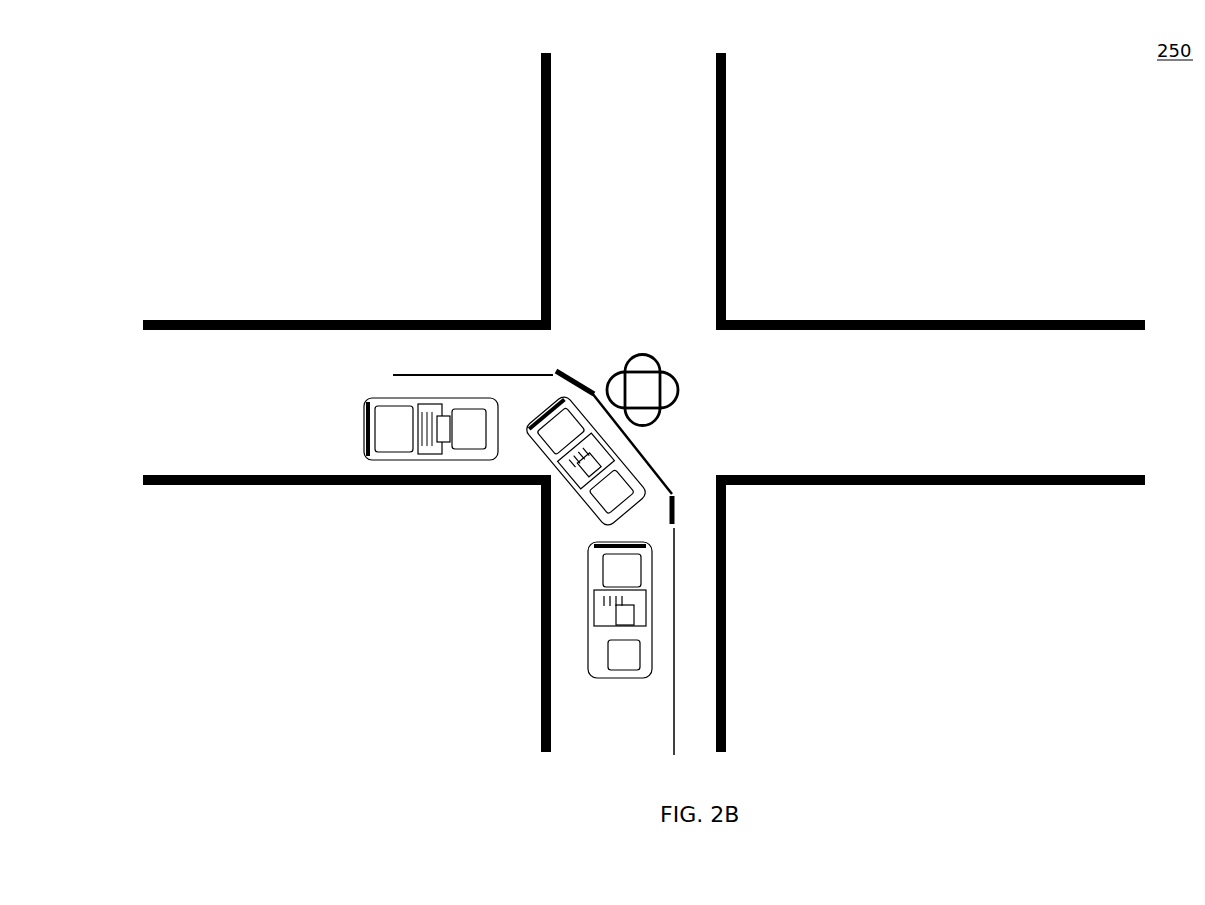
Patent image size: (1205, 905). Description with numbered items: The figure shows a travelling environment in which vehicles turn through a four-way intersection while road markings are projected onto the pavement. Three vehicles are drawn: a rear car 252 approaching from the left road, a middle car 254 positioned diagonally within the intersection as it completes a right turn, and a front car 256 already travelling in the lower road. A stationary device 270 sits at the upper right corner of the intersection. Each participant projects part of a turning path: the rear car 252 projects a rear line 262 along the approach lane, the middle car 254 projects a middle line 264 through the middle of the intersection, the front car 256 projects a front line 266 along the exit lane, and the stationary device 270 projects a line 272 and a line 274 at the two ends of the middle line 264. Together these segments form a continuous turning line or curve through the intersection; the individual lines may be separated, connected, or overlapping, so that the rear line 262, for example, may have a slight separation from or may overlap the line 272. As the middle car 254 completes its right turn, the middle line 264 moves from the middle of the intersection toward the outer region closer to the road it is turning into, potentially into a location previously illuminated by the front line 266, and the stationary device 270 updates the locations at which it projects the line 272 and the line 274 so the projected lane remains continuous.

The rear car 252 is at (363, 427).
The middle car 254 is at (580, 507).
The front car 256 is at (623, 683).
The rear line 262 is at (452, 373).
The middle line 264 is at (643, 447).
The front line 266 is at (675, 613).
The stationary device 270 is at (672, 368).
The line 272 is at (560, 375).
The line 274 is at (677, 510).